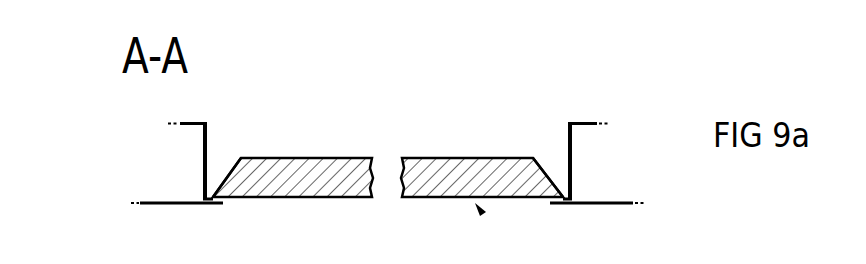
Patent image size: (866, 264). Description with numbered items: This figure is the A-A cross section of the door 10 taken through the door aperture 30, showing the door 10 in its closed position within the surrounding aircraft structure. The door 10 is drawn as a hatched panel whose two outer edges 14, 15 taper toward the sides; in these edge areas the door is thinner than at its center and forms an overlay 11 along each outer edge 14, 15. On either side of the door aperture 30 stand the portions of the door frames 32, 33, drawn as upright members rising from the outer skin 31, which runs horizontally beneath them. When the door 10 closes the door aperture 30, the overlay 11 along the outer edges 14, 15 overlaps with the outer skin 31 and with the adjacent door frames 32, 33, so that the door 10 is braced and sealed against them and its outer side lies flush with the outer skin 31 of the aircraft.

The door 10 is at (456, 158).
The overlay 11 is at (214, 190).
The outer edge 14 is at (203, 192).
The outer edge 15 is at (573, 194).
The door aperture 30 is at (485, 216).
The outer skin 31 is at (190, 205).
The door frame 32 is at (586, 122).
The door frame 33 is at (186, 123).